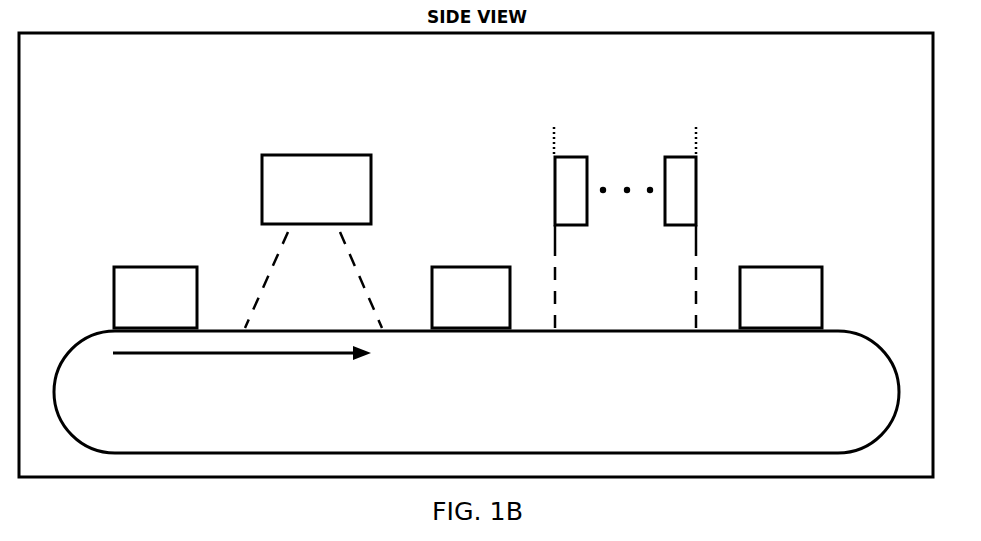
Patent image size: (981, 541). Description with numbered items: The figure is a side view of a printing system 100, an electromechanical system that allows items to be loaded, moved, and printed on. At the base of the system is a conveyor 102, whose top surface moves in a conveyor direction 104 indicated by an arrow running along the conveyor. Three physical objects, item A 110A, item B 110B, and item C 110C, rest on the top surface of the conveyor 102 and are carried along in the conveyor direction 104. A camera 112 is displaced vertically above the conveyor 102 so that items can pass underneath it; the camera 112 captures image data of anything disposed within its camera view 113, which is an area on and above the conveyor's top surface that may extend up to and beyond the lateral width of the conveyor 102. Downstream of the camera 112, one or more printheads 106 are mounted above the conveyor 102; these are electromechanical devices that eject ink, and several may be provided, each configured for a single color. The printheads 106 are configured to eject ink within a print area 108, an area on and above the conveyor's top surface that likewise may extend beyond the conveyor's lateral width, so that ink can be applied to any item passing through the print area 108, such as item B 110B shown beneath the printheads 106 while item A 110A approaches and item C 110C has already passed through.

The printing system 100 is at (62, 120).
The conveyor 102 is at (835, 445).
The conveyor direction 104 is at (242, 364).
The printhead(s) 106 is at (697, 127).
The print area 108 is at (697, 262).
The item A 110A is at (178, 321).
The item B 110B is at (494, 321).
The item C 110C is at (804, 321).
The camera 112 is at (333, 216).
The camera view 113 is at (357, 270).